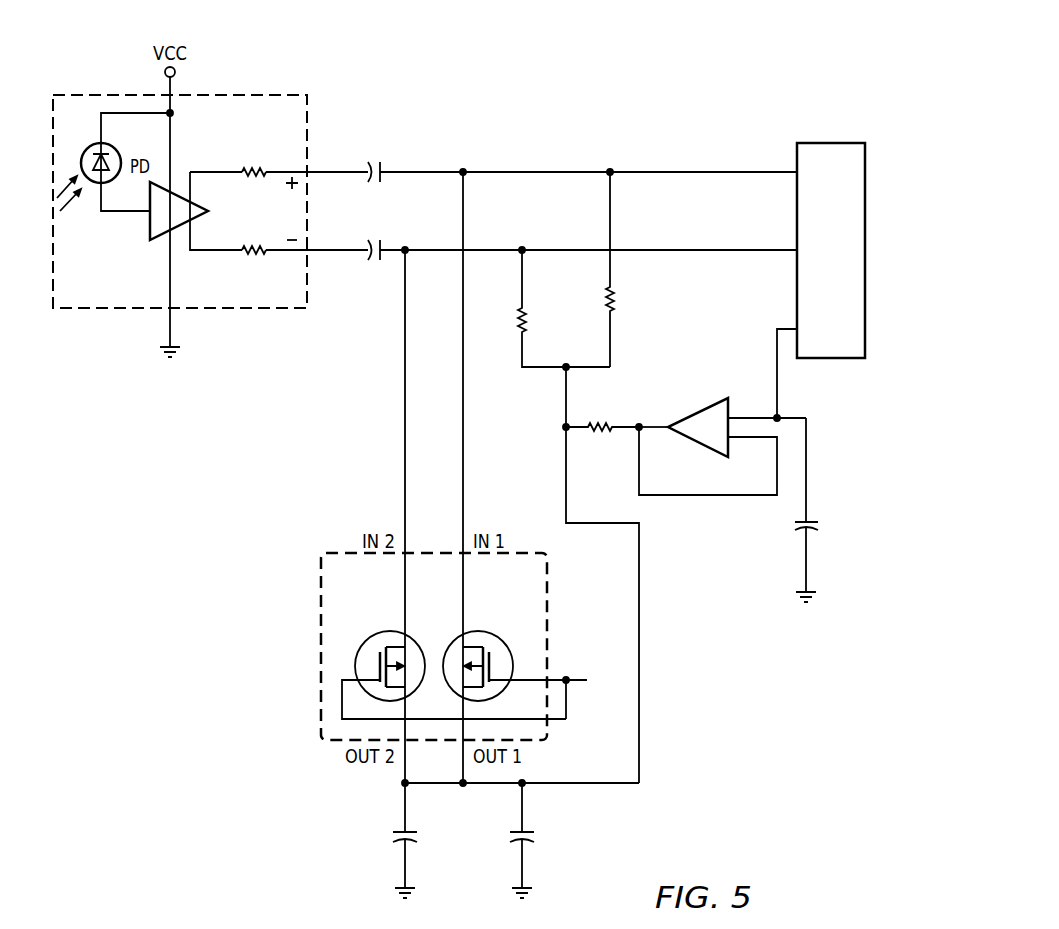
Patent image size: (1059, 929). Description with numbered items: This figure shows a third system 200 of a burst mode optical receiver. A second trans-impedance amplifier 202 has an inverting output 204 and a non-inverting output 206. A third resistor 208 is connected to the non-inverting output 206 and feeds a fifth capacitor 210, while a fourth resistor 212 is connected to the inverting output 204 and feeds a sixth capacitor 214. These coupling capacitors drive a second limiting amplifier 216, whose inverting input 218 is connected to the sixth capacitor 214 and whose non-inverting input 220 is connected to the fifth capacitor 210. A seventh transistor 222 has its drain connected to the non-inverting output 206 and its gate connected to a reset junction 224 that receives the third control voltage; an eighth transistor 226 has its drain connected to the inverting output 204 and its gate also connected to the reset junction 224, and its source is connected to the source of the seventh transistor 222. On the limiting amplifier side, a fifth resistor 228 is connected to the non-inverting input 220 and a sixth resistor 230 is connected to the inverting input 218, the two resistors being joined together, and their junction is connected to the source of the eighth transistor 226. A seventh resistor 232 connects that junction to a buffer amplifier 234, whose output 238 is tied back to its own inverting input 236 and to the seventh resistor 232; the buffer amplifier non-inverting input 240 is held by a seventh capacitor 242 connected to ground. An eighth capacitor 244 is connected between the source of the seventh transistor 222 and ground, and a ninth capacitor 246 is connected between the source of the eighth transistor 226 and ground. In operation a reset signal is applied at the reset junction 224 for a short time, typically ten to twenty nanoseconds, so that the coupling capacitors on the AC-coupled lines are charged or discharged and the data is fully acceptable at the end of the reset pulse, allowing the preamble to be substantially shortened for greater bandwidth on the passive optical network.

The third system of burst mode optical receiver 200 is at (624, 60).
The second trans-impedance amplifier 202 is at (150, 227).
The inverting output 204 is at (213, 253).
The non-inverting output 206 is at (213, 170).
The third resistor 208 is at (257, 167).
The fifth capacitor 210 is at (370, 160).
The fourth resistor 212 is at (252, 257).
The sixth capacitor 214 is at (371, 262).
The second limiting amplifier 216 is at (837, 142).
The inverting input 218 is at (678, 248).
The non-inverting input 220 is at (678, 170).
The seventh transistor 222 is at (482, 632).
The reset junction 224 is at (575, 677).
The eighth transistor 226 is at (383, 632).
The fifth resistor 228 is at (615, 302).
The sixth resistor 230 is at (527, 320).
The seventh resistor 232 is at (600, 433).
The buffer amplifier 234 is at (700, 410).
The inverting input 236 is at (690, 497).
The output 238 is at (657, 430).
The non-inverting input 240 is at (797, 413).
The seventh capacitor 242 is at (795, 525).
The eighth capacitor 244 is at (395, 838).
The ninth capacitor 246 is at (512, 838).